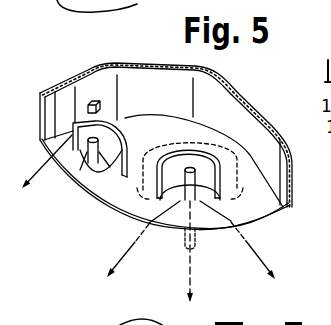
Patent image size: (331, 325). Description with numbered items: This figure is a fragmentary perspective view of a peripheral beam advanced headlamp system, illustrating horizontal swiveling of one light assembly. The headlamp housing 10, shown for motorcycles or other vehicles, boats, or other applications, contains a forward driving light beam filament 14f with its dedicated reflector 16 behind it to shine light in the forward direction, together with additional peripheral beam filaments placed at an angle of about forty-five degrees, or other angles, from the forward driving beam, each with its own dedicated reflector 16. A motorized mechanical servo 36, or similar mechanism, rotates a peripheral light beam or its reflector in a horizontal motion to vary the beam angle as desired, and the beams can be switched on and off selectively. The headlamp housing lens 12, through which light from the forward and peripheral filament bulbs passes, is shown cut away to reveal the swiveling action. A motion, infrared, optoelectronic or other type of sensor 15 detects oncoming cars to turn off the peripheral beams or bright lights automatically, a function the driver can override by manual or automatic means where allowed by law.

The headlamp housing 10 is at (117, 204).
The lens 12 is at (248, 107).
The forward driving light beam filament 14f is at (89, 190).
The sensor 15 is at (90, 101).
The reflector 16 is at (47, 158).
The servo 36 is at (196, 249).